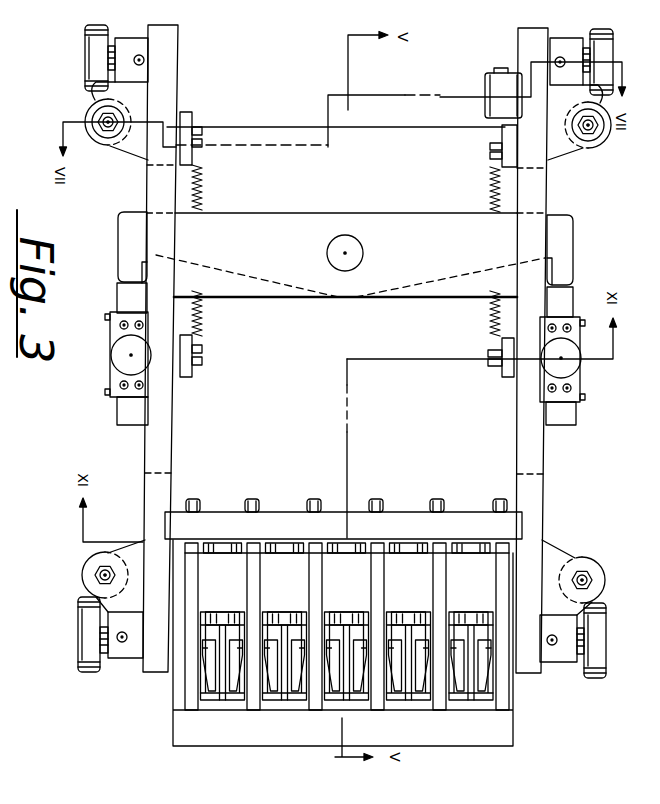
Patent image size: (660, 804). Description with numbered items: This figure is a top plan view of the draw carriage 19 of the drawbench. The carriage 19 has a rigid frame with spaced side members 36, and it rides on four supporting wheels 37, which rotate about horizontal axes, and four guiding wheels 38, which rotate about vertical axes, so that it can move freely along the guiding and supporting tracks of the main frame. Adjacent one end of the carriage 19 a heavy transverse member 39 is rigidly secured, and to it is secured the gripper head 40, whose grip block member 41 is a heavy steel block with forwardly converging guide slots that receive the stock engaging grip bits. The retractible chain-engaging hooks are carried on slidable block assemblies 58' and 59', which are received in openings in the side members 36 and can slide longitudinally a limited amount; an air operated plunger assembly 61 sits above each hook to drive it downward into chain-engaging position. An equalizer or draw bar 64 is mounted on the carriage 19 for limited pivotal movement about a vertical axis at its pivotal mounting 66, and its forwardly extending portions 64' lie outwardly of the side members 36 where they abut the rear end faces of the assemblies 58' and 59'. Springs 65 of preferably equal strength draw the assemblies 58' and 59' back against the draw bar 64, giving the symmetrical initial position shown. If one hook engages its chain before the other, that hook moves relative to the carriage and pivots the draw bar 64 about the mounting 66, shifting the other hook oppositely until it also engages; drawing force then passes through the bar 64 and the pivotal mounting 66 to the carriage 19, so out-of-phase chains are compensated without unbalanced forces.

The draw carriage 19 is at (326, 386).
The side members 36 is at (151, 488).
The supporting wheels 37 is at (84, 616).
The guiding wheels 38 is at (88, 563).
The transverse member 39 is at (417, 513).
The gripper head 40 is at (340, 592).
The grip block member 41 is at (503, 723).
The slidable block assembly 58' is at (111, 299).
The slidable block assembly 59' is at (576, 312).
The air operated plunger assembly 61 is at (118, 357).
The draw bar 64 is at (350, 279).
The forwardly extending portions 64' is at (341, 248).
The springs 65 is at (495, 192).
The pivotal mounting 66 is at (360, 253).